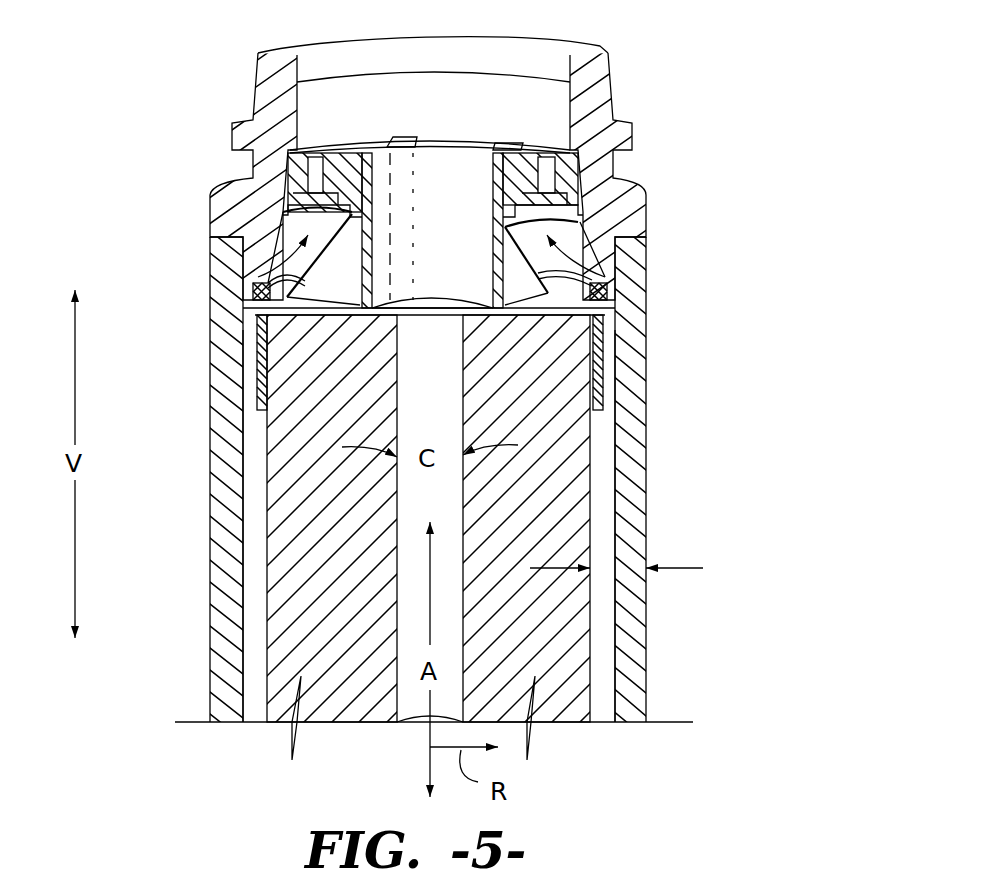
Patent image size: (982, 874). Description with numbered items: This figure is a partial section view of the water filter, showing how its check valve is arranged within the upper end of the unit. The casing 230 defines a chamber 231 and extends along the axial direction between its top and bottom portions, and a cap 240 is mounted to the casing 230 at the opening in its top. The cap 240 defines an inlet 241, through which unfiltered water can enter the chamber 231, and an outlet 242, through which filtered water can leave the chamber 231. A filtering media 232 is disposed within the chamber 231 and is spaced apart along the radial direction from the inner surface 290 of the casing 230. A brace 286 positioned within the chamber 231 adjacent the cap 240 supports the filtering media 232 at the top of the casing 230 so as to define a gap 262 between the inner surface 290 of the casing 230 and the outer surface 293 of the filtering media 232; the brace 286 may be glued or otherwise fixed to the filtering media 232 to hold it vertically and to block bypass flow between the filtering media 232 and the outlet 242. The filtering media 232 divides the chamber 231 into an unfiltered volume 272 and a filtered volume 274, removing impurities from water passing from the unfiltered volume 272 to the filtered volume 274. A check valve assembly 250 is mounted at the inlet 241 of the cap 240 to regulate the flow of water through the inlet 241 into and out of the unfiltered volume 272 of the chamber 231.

The cap 240 is at (517, 67).
The casing 230 is at (632, 462).
The check valve assembly 250 is at (323, 197).
The outlet 242 is at (433, 295).
The inlet 241 is at (258, 278).
The brace 286 is at (603, 398).
The filtering media 232 is at (290, 638).
The chamber 231 is at (258, 477).
The unfiltered volume 272 is at (258, 510).
The gap 262 is at (700, 568).
The inner surface 290 is at (597, 622).
The outer surface 293 is at (590, 675).
The filtered volume 274 is at (413, 695).